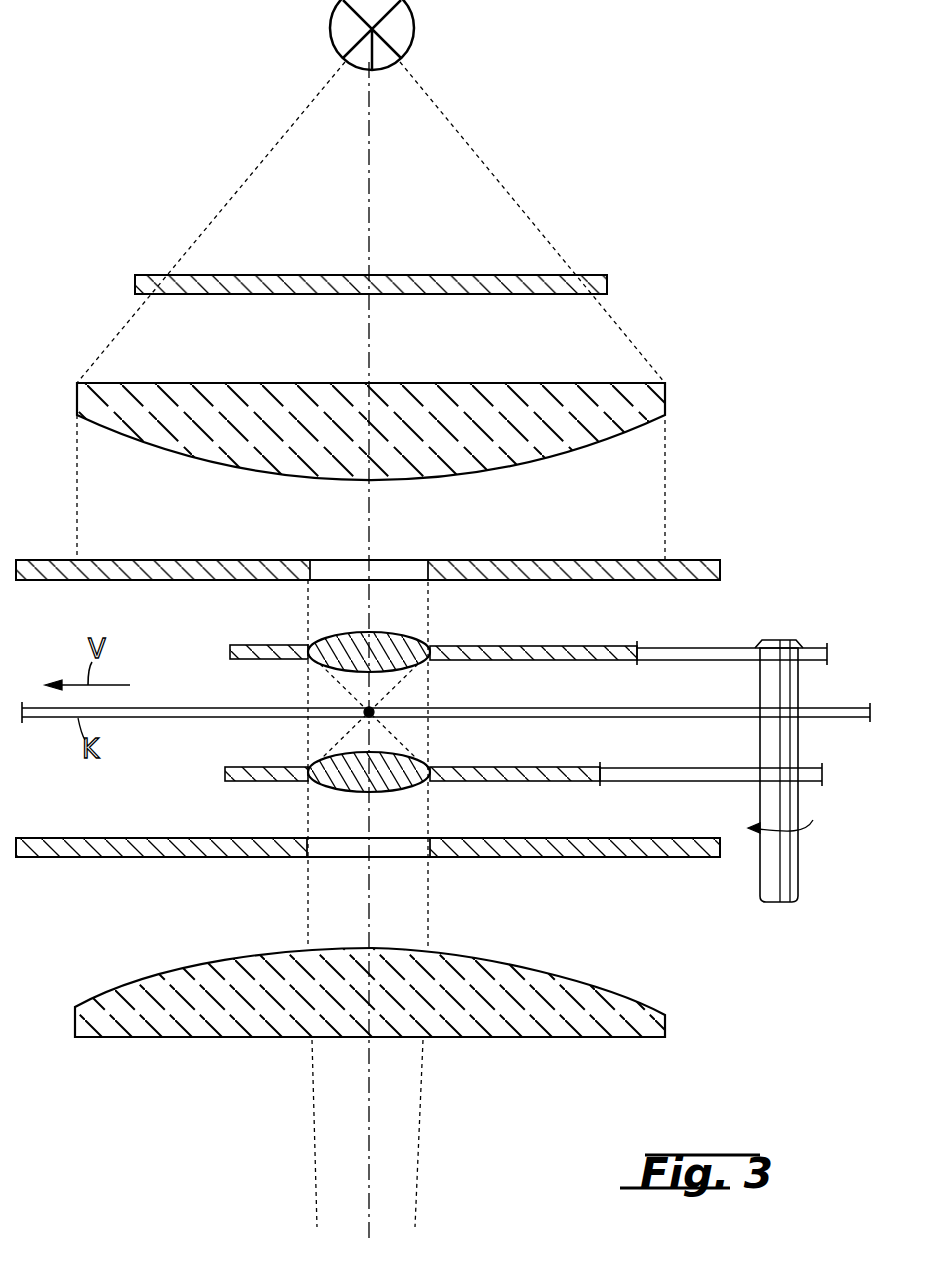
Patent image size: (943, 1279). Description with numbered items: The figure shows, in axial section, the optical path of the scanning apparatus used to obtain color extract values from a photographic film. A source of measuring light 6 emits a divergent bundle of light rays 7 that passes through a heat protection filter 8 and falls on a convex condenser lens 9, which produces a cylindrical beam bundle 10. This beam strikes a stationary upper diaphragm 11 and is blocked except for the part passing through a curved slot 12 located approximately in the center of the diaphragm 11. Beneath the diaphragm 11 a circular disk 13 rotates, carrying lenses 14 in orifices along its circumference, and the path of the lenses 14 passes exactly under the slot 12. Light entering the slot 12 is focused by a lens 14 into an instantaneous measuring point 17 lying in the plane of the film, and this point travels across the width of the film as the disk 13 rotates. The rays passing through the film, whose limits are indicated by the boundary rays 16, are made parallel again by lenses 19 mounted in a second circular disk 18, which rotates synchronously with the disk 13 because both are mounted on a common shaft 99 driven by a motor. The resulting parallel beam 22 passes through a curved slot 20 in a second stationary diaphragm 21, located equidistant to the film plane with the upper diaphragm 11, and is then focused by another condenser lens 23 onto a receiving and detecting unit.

The source of measuring light 6 is at (408, 30).
The divergent bundle of light rays 7 is at (496, 177).
The heat protection filter 8 is at (541, 278).
The convex condenser lens 9 is at (588, 400).
The cylindrical beam bundle 10 is at (665, 468).
The upper diaphragm 11 is at (707, 565).
The curved slot 12 is at (410, 567).
The circular disk 13 is at (609, 650).
The lenses 14 is at (395, 632).
The boundary rays 16 is at (337, 688).
The instantaneous measuring point 17 is at (380, 722).
The second circular disk 18 is at (563, 768).
The lenses 19 is at (408, 782).
The curved slot 20 is at (398, 850).
The second stationary diaphragm 21 is at (632, 862).
The parallel beam 22 is at (430, 937).
The condenser lens 23 is at (660, 1022).
The common shaft 99 is at (790, 868).